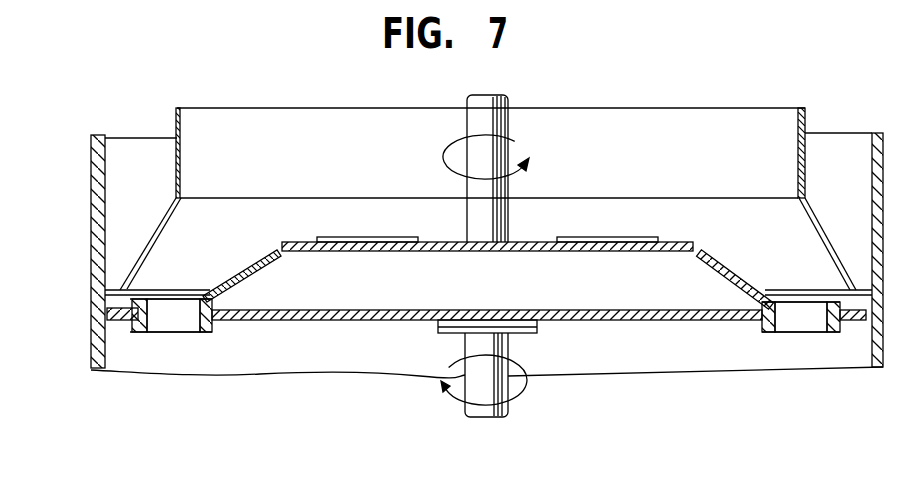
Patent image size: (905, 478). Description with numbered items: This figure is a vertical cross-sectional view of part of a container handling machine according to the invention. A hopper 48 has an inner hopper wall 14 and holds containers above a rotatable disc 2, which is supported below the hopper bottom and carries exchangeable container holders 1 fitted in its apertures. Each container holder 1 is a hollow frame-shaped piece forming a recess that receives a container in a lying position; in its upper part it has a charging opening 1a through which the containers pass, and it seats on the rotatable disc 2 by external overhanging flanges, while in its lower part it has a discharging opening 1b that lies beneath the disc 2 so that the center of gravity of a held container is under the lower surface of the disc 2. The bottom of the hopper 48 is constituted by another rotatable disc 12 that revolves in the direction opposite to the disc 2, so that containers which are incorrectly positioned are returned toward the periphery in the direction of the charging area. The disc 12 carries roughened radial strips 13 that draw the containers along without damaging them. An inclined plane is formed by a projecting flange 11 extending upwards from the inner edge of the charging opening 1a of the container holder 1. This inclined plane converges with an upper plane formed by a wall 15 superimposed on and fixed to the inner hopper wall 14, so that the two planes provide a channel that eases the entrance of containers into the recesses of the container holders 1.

The hopper 48 is at (93, 244).
The inner hopper wall 14 is at (105, 162).
The wall 15 is at (172, 214).
The container holder 1 is at (144, 335).
The charging opening 1a is at (165, 290).
The discharging opening 1b is at (175, 334).
The rotatable disc 2 is at (380, 322).
The projecting flange 11 is at (250, 287).
The rotatable disc 12 is at (530, 242).
The roughened radial strips 13 is at (367, 237).